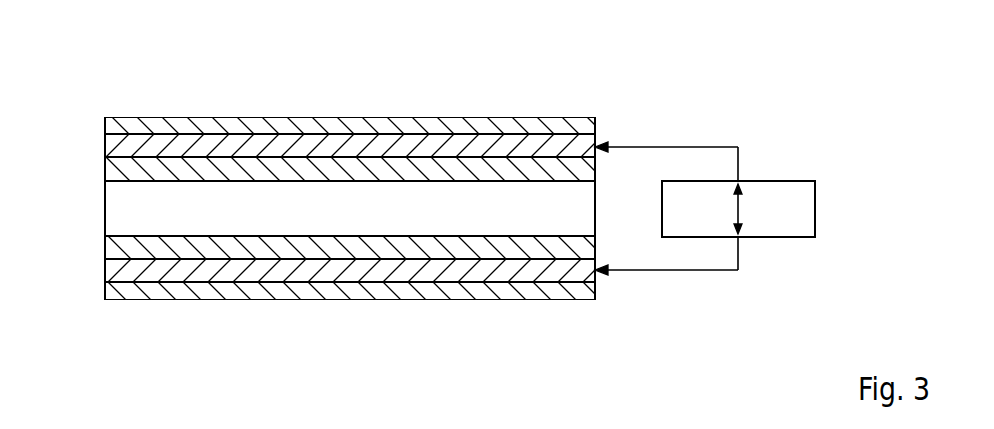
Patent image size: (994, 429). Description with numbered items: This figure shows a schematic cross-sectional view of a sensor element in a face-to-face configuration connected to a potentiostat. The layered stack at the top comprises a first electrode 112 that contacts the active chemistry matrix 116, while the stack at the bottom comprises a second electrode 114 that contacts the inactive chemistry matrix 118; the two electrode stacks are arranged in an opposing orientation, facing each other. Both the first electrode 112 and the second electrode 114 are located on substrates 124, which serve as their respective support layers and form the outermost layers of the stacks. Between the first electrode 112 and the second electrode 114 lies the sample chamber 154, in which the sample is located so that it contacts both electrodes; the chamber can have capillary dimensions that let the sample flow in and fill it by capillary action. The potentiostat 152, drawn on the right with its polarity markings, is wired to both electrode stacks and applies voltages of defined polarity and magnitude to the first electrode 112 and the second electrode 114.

The substrates 124 is at (337, 128).
The first electrode 112 is at (425, 147).
The active chemistry matrix 116 is at (505, 170).
The inactive chemistry matrix 118 is at (508, 250).
The second electrode 114 is at (427, 268).
The sample chamber 154 is at (128, 213).
The potentiostat 152 is at (797, 213).